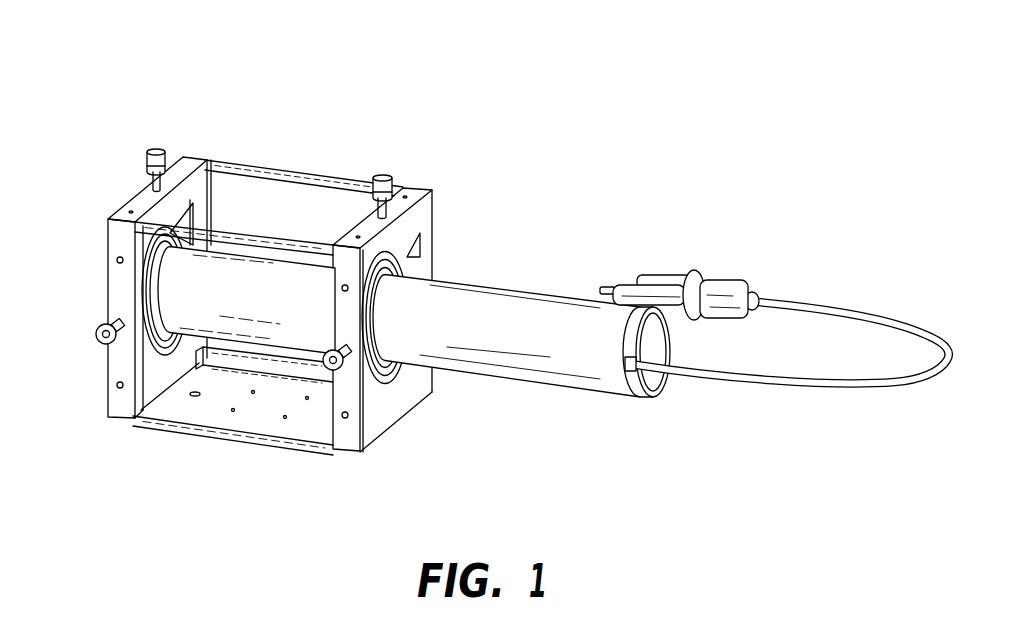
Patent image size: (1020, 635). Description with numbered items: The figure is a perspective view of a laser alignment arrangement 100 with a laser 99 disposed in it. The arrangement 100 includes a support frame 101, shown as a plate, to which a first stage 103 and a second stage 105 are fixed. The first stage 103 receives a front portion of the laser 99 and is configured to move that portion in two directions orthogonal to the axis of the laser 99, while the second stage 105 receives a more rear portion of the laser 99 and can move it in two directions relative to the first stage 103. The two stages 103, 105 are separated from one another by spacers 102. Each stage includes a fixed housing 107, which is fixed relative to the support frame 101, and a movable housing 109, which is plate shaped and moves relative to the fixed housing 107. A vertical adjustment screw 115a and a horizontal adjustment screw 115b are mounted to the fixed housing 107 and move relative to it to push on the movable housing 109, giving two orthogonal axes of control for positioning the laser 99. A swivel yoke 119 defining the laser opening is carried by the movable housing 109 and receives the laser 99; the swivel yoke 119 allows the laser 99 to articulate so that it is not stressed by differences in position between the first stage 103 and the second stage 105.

The laser alignment arrangement 100 is at (489, 282).
The laser 99 is at (497, 305).
The support frame 101 is at (198, 395).
The spacer 102 is at (285, 440).
The first stage 103 is at (186, 160).
The second stage 105 is at (367, 215).
The fixed housing 107 is at (118, 238).
The movable housing 109 is at (116, 259).
The vertical adjustment screw 115a is at (158, 149).
The horizontal adjustment screw 115b is at (102, 345).
The swivel yoke 119 is at (182, 343).